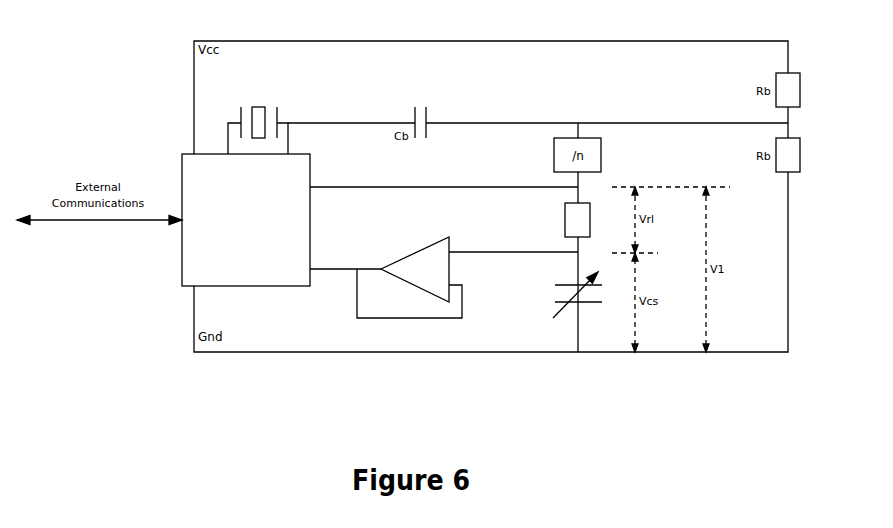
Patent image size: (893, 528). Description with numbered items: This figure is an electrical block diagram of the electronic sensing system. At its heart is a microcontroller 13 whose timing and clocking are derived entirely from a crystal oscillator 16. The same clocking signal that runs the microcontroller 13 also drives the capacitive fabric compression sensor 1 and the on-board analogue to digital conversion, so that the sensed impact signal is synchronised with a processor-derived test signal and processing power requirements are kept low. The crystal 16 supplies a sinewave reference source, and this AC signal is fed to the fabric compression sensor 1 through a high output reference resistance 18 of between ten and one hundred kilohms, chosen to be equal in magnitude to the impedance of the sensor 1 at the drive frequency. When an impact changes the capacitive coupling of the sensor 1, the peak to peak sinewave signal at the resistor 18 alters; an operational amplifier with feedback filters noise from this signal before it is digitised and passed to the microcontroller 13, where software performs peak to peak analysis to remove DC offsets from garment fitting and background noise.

The capacitive fabric compression sensor 1 is at (560, 303).
The microcontroller 13 is at (202, 253).
The crystal oscillator 16 is at (252, 106).
The high output reference resistance 18 is at (563, 203).